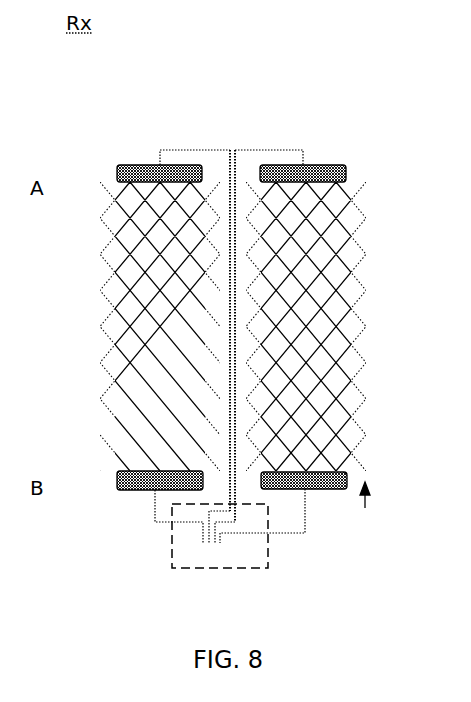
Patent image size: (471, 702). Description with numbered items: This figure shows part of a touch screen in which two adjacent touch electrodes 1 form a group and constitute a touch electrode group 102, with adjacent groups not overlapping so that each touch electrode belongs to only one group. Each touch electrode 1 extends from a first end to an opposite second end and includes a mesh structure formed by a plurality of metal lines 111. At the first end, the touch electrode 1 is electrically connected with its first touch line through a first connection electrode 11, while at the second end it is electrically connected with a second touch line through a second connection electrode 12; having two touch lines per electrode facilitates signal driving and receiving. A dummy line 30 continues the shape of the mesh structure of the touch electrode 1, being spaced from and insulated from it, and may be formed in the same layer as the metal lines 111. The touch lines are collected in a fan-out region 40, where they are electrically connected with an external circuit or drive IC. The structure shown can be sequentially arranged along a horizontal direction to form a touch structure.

The touch electrode group 102 is at (304, 103).
The touch electrode 1 is at (235, 292).
The first connection electrode 11 is at (325, 165).
The metal line 111 is at (114, 455).
The second connection electrode 12 is at (328, 489).
The dummy line 30 is at (367, 509).
The fan-out region 40 is at (250, 568).